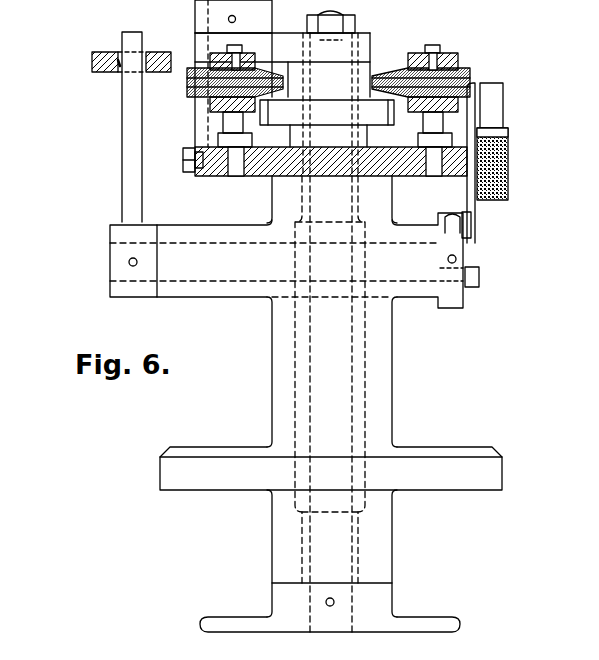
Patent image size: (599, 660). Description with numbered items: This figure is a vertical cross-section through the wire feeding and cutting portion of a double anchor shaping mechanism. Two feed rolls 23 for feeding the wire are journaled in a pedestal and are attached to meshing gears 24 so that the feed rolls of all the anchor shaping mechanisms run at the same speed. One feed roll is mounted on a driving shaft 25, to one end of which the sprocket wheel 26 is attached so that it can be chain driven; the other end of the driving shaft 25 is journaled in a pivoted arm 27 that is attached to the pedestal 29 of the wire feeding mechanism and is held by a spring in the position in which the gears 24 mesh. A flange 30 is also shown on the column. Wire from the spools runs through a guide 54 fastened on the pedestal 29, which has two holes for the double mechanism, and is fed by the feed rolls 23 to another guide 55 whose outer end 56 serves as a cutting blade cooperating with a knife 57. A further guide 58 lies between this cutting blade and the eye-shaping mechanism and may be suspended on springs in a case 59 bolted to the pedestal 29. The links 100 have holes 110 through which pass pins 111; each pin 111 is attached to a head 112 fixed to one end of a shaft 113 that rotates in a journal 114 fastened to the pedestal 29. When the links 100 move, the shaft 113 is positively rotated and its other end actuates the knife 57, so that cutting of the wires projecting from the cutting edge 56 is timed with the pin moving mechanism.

The feed rolls 23 is at (357, 80).
The meshing gears 24 is at (290, 108).
The driving shaft 25 is at (352, 329).
The sprocket wheel 26 is at (462, 623).
The pivoted arm 27 is at (366, 40).
The pedestal 29 is at (393, 361).
The flange 30 is at (503, 466).
The guide 54 is at (190, 88).
The guide 55 is at (401, 70).
The outer end of guide 56 is at (470, 70).
The knife 57 is at (505, 115).
The guide 58 is at (504, 92).
The case 59 is at (509, 163).
The links 100 is at (92, 58).
The holes 110 is at (118, 66).
The pins 111 is at (125, 127).
The head 112 is at (118, 234).
The shaft 113 is at (197, 283).
The journal 114 is at (243, 297).